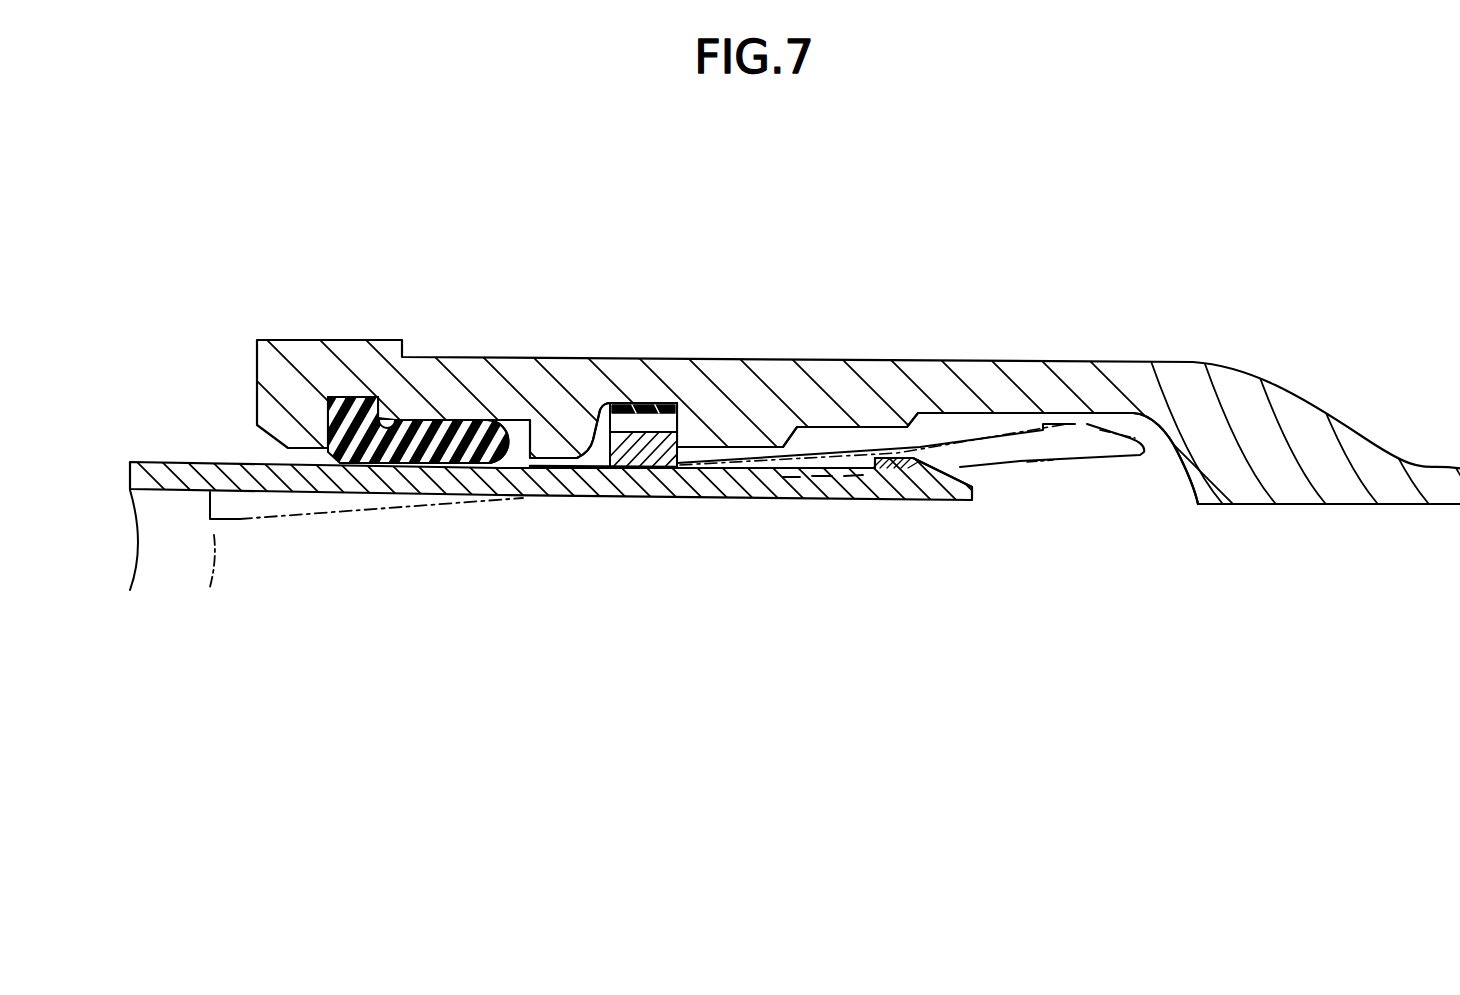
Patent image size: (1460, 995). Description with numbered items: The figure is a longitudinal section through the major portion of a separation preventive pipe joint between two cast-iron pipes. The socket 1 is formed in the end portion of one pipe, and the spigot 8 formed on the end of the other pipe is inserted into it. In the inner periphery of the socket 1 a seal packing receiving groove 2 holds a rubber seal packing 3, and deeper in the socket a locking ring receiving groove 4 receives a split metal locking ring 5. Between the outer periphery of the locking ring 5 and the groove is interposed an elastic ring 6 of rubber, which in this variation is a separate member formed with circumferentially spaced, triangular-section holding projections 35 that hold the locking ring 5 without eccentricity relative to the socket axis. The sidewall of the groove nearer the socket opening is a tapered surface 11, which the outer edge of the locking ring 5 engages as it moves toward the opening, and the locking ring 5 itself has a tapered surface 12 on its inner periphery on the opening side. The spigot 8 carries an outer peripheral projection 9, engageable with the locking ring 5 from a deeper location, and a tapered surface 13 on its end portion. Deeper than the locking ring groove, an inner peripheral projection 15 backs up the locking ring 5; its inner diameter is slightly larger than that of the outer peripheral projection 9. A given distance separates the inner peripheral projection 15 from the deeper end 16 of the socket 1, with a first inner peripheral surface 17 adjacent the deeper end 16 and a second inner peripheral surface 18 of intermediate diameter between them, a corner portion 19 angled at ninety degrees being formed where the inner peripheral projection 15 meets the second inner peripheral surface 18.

The socket 1 is at (568, 357).
The seal packing receiving groove 2 is at (427, 420).
The seal packing 3 is at (355, 425).
The locking ring receiving groove 4 is at (626, 408).
The locking ring 5 is at (663, 447).
The elastic ring 6 is at (650, 405).
The spigot 8 is at (769, 500).
The outer peripheral projection 9 is at (957, 470).
The tapered surface 11 is at (595, 442).
The tapered surface 12 is at (606, 465).
The tapered surface 13 is at (957, 413).
The inner peripheral projection 15 is at (743, 437).
The deeper end 16 is at (1186, 478).
The first inner peripheral surface 17 is at (1013, 413).
The second inner peripheral surface 18 is at (845, 428).
The corner portion 19 is at (803, 433).
The holding projections 35 is at (688, 430).